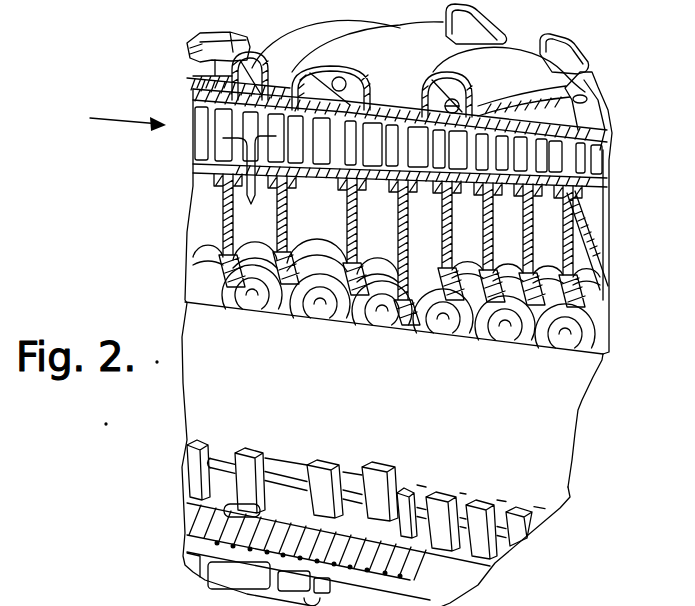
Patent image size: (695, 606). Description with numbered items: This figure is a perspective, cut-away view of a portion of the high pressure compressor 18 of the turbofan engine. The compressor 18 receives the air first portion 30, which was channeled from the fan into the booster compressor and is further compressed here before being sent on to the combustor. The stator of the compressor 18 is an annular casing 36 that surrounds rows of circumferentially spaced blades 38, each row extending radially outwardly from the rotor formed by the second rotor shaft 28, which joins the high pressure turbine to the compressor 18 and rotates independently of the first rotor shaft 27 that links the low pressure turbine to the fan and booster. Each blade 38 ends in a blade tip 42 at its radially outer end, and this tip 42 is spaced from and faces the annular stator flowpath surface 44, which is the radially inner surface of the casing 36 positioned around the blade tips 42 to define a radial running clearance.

The high pressure compressor 18 is at (312, 15).
The first rotor shaft 27 is at (568, 408).
The second rotor shaft 28 is at (196, 171).
The air first portion 30 is at (108, 113).
The annular casing 36 is at (208, 40).
The blades 38 is at (249, 182).
The blade tip 42 is at (215, 108).
The annular stator flowpath surface 44 is at (196, 96).